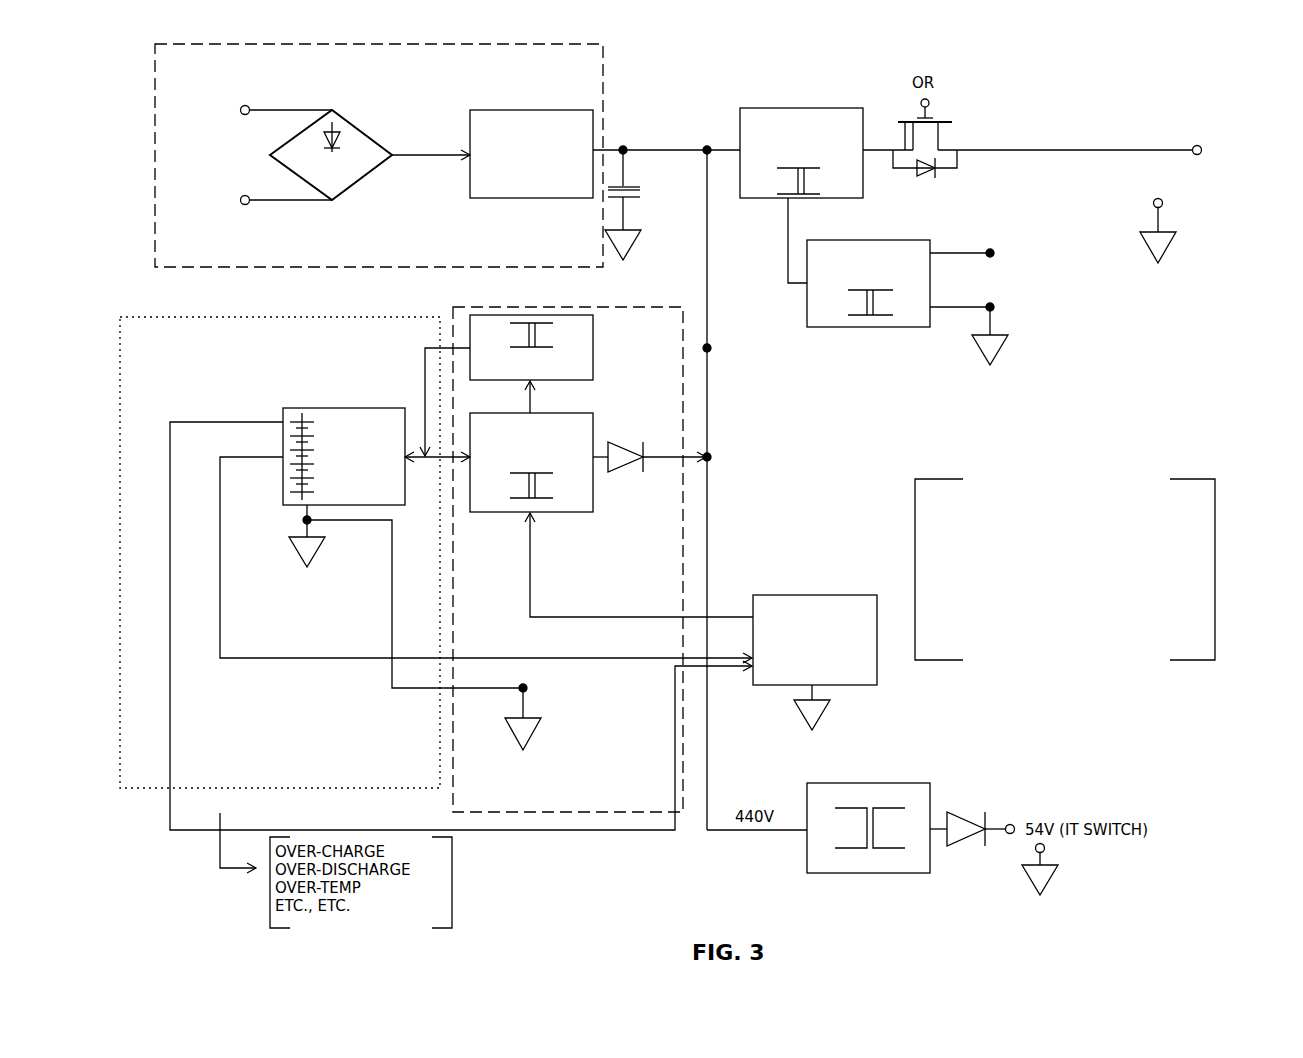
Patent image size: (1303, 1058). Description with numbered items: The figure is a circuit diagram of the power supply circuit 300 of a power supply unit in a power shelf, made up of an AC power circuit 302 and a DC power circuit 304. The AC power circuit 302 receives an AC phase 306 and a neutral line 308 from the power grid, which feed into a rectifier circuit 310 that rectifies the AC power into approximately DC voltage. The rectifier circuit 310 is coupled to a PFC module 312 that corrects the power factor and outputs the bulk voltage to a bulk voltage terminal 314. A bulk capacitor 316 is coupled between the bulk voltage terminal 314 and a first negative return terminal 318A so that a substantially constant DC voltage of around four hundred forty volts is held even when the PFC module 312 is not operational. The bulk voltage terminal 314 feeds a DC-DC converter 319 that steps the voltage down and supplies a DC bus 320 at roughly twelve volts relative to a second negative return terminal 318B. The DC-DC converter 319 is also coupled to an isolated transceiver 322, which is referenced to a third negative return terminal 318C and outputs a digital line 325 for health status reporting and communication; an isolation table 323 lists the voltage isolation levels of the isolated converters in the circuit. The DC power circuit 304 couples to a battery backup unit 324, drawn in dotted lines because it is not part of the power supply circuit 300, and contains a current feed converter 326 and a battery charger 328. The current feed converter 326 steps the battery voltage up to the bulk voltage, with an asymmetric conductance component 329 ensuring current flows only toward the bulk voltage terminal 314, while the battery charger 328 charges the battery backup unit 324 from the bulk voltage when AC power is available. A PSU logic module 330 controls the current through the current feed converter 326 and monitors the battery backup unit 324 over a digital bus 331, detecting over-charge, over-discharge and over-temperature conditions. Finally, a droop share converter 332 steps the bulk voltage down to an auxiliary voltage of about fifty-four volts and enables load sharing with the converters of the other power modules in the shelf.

The power supply circuit 300 is at (1245, 112).
The AC power circuit 302 is at (379, 155).
The DC power circuit 304 is at (603, 559).
The AC phase 306 is at (241, 106).
The neutral line 308 is at (241, 196).
The rectifier circuit 310 is at (331, 155).
The PFC module 312 is at (531, 154).
The bulk voltage terminal 314 is at (626, 147).
The bulk capacitor 316 is at (641, 192).
The first negative return terminal 318A is at (633, 248).
The second negative return terminal 318B is at (1171, 250).
The third negative return terminal 318C is at (1006, 353).
The DC-DC converter 319 is at (801, 154).
The DC bus 320 is at (1194, 147).
The isolated transceiver 322 is at (868, 283).
The isolation table 323 is at (1065, 559).
The battery backup unit 324 is at (280, 592).
The digital line 325 is at (983, 253).
The current feed converter 326 is at (531, 462).
The battery charger 328 is at (594, 368).
The asymmetric conductance component 329 is at (620, 465).
The PSU logic module 330 is at (815, 640).
The digital bus 331 is at (573, 659).
The droop share converter 332 is at (932, 858).